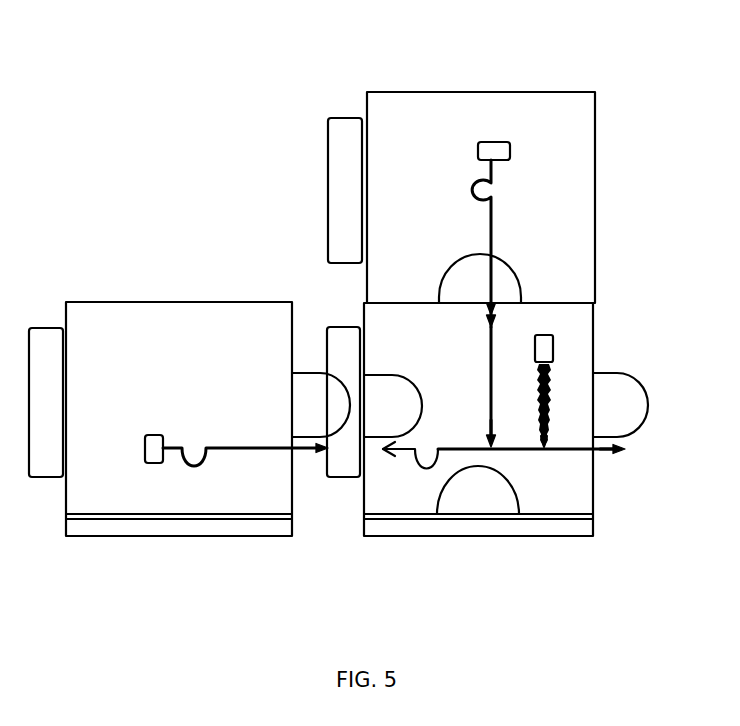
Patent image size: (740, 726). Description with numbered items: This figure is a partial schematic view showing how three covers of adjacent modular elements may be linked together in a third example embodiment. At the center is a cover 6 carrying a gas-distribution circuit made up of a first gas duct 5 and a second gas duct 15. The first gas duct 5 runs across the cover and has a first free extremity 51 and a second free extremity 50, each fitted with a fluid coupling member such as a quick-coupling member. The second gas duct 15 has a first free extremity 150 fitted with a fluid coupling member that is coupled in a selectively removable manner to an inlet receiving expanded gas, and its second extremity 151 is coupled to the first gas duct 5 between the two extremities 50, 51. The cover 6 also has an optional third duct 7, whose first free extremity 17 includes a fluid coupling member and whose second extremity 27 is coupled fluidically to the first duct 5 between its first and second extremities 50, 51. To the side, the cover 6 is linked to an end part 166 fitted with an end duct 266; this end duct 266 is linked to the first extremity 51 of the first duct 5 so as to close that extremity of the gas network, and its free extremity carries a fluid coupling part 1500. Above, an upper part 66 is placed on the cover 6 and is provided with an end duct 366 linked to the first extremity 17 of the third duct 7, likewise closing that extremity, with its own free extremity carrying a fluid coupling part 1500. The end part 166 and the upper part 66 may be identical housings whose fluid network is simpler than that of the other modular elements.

The end part 166 is at (158, 302).
The upper part 66 is at (595, 143).
The cover 6 is at (593, 367).
The fluid coupling part 1500 is at (498, 140).
The end duct 266 is at (252, 452).
The end duct 366 is at (491, 225).
The first free extremity 17 is at (502, 318).
The third duct 7 is at (488, 362).
The second extremity 27 is at (488, 440).
The first free extremity 150 is at (548, 330).
The second gas duct 15 is at (552, 386).
The second extremity 151 is at (553, 437).
The first gas duct 5 is at (568, 453).
The first free extremity 51 is at (392, 457).
The second free extremity 50 is at (624, 460).